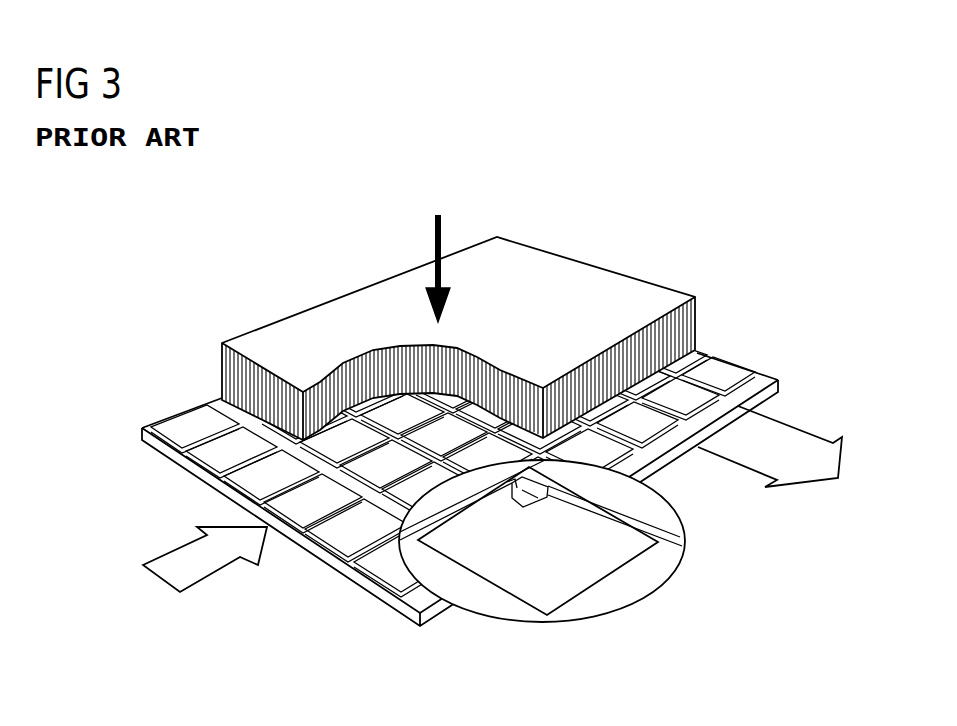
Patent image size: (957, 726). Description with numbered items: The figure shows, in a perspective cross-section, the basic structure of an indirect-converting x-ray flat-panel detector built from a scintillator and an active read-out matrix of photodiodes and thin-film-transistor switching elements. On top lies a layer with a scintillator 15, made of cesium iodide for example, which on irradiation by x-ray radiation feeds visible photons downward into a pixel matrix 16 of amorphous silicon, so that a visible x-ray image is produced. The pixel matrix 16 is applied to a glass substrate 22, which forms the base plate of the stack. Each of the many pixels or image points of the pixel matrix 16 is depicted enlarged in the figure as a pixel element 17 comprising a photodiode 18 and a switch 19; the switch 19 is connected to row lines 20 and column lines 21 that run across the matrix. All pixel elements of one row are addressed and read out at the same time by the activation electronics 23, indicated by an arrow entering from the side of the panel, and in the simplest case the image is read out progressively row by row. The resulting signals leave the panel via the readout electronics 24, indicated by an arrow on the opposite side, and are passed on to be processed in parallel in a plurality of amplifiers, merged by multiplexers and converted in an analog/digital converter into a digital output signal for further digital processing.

The scintillator 15 is at (692, 328).
The pixel matrix 16 is at (307, 508).
The pixel element 17 is at (663, 567).
The photodiode 18 is at (543, 585).
The switch 19 is at (543, 497).
The row lines 20 is at (363, 573).
The column lines 21 is at (672, 508).
The glass substrate 22 is at (165, 448).
The activation electronics 23 is at (185, 552).
The readout electronics 24 is at (813, 462).